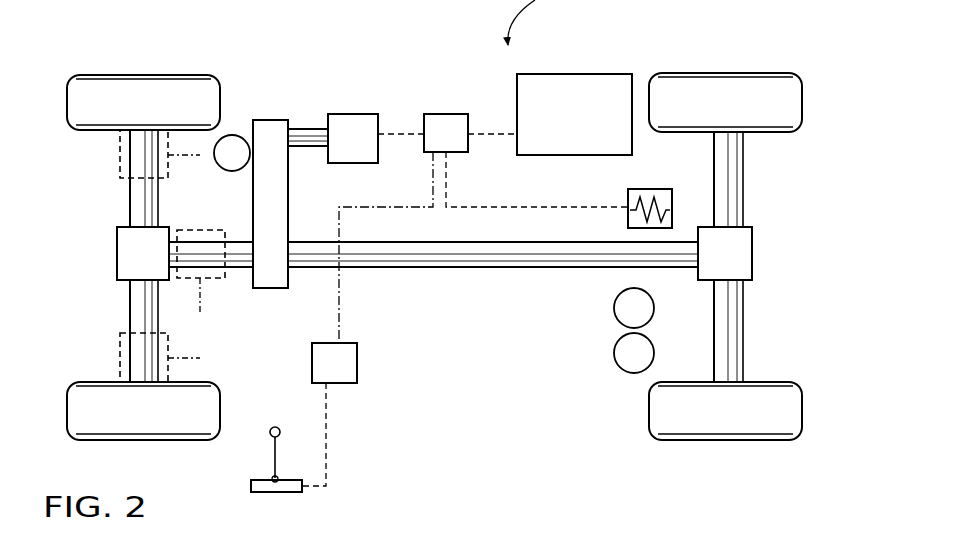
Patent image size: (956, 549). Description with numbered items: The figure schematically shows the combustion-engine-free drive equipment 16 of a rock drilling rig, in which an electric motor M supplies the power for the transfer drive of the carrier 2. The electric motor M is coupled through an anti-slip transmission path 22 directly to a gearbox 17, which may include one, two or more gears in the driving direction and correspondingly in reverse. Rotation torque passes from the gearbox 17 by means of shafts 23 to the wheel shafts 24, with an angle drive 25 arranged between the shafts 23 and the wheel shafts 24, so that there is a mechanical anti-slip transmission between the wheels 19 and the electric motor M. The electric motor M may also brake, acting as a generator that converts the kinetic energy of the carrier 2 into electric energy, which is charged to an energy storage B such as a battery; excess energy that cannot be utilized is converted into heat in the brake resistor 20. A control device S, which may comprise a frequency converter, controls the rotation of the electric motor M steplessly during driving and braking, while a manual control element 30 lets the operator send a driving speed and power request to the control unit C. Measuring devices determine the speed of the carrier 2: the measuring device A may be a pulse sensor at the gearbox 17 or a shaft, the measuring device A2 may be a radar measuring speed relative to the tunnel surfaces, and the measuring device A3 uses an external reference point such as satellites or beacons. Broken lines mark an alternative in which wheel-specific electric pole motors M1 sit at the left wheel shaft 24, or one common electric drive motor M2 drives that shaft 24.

The carrier 2 is at (88, 195).
The drive equipment 16 is at (307, 42).
The gearbox 17 is at (270, 128).
The wheel 19 is at (135, 88).
The brake resistor 20 is at (641, 196).
The anti-slip transmission path 22 is at (305, 138).
The shaft 23 is at (238, 250).
The wheel shaft 24 is at (133, 208).
The angle drive 25 is at (120, 252).
The manual control element 30 is at (247, 457).
The electric motor M is at (342, 153).
The control device S is at (437, 146).
The energy storage B is at (565, 127).
The control unit C is at (325, 376).
The wheel-specific electric pole motor M1 is at (120, 166).
The common electric drive motor M2 is at (210, 282).
The measuring device A is at (224, 165).
The measuring device A2 is at (622, 320).
The measuring device A3 is at (622, 365).